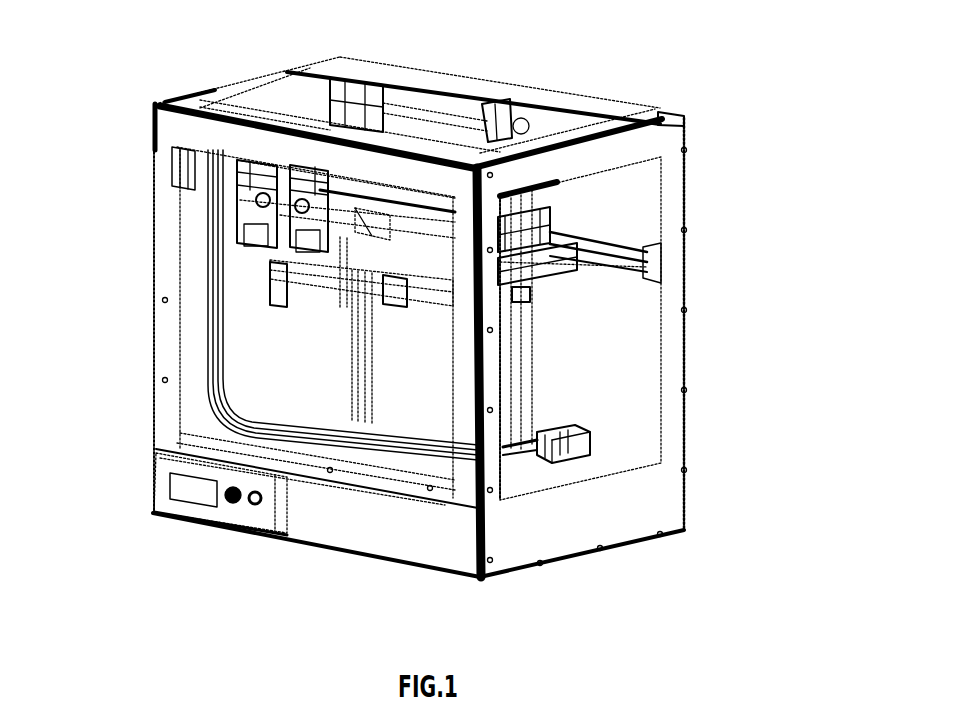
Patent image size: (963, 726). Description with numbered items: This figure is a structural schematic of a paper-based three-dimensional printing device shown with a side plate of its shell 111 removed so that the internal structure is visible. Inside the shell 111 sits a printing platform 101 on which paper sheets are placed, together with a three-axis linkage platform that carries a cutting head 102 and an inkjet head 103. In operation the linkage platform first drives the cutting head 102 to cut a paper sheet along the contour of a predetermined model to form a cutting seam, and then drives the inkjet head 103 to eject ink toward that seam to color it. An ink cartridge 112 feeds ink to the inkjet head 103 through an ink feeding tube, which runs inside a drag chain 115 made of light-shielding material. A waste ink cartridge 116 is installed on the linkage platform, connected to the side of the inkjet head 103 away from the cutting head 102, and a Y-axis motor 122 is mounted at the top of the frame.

The printing platform 101 is at (384, 257).
The cutting head 102 is at (308, 232).
The inkjet head 103 is at (265, 220).
The shell 111 is at (657, 510).
The ink cartridge 112 is at (580, 428).
The drag chain 115 is at (209, 377).
The waste ink cartridge 116 is at (220, 168).
The Y-axis motor 122 is at (497, 133).